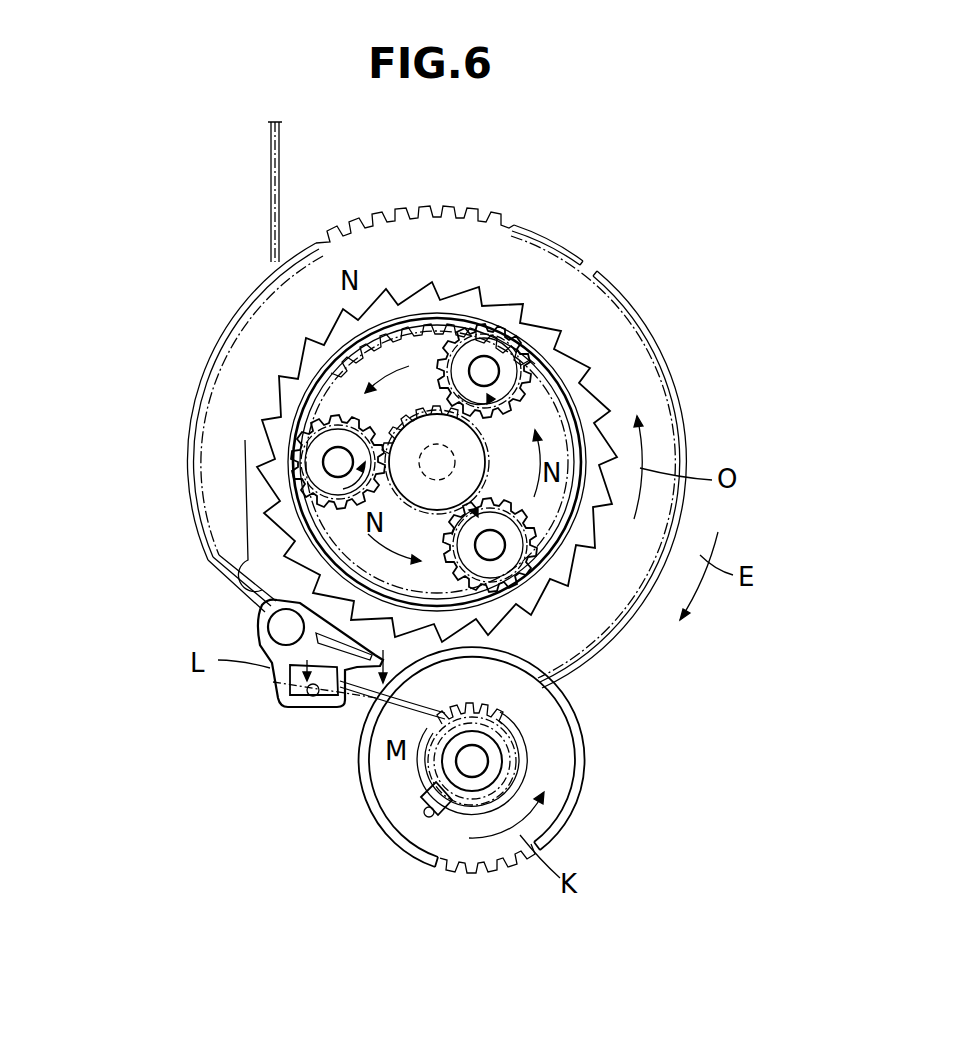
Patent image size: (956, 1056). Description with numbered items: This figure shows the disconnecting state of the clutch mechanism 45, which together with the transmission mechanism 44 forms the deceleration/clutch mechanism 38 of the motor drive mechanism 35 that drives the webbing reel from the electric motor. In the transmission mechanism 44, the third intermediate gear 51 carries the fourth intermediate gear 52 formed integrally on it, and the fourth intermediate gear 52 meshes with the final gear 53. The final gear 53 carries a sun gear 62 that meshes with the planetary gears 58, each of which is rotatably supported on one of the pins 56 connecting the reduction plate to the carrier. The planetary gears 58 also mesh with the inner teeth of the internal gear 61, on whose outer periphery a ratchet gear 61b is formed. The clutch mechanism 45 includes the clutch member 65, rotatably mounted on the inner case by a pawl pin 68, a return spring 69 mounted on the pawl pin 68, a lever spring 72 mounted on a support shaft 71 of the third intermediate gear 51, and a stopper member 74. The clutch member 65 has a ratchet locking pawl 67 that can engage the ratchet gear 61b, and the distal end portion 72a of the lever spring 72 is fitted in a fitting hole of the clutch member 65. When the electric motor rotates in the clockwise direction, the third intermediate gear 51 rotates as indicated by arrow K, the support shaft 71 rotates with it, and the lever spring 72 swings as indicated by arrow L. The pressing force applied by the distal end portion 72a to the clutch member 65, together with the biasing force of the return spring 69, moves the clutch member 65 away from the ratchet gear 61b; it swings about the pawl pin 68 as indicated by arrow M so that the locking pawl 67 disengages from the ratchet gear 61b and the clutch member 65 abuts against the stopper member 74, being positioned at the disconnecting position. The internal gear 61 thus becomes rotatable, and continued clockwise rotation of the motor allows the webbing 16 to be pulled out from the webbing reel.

The webbing 16 is at (270, 172).
The motor drive mechanism 35 is at (634, 107).
The deceleration/clutch mechanism 38 is at (669, 160).
The transmission mechanism 44 is at (685, 224).
The clutch mechanism 45 is at (256, 838).
The third intermediate gear 51 is at (584, 790).
The fourth intermediate gear 52 is at (520, 742).
The final gear 53 is at (678, 378).
The pins 56 is at (489, 368).
The planetary gears 58 is at (472, 345).
The internal gear 61 is at (582, 362).
The ratchet gear 61b is at (400, 655).
The sun gear 62 is at (400, 433).
The clutch member 65 is at (272, 676).
The ratchet locking pawl 67 is at (372, 648).
The pawl pin 68 is at (288, 627).
The return spring 69 is at (262, 557).
The support shaft 71 is at (430, 800).
The lever spring 72 is at (330, 705).
The distal end portion 72a is at (296, 683).
The stopper member 74 is at (312, 693).